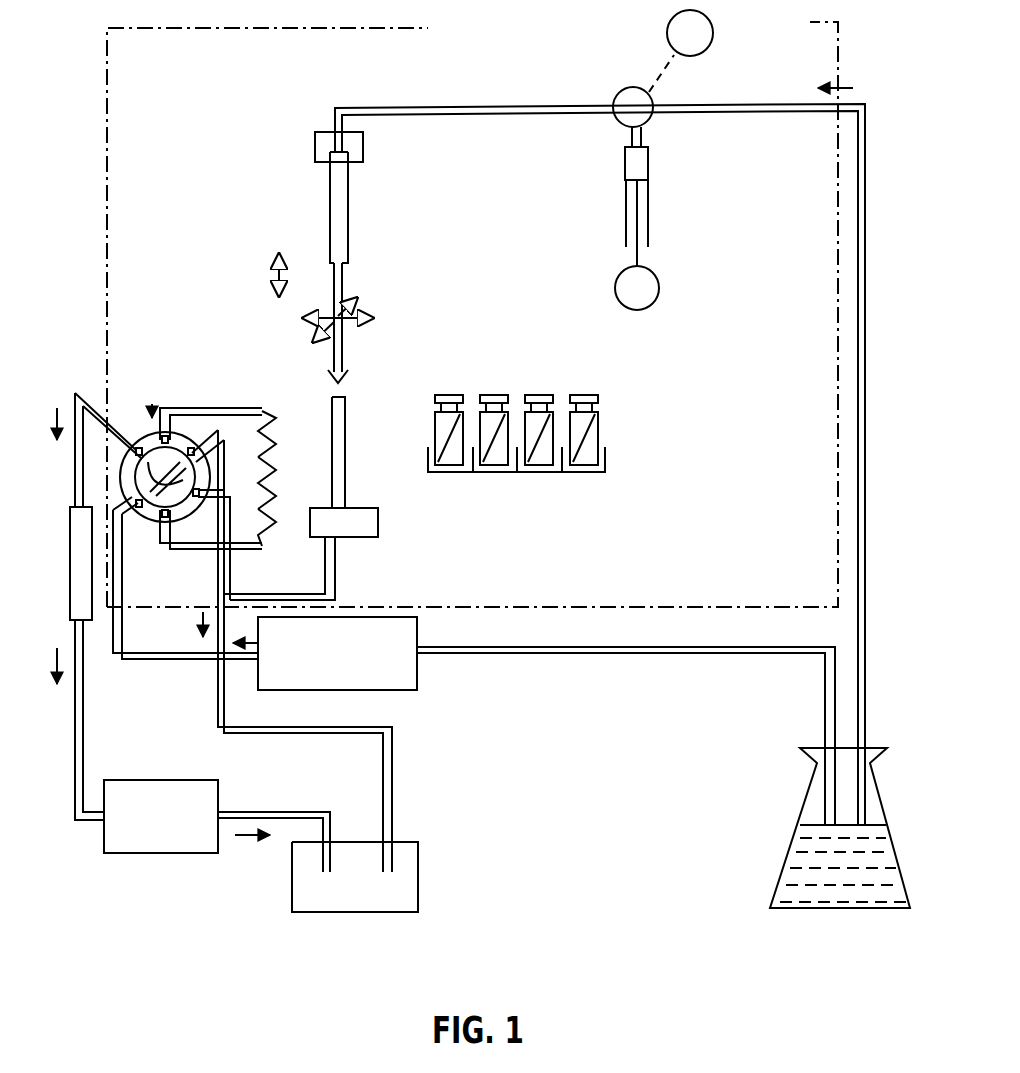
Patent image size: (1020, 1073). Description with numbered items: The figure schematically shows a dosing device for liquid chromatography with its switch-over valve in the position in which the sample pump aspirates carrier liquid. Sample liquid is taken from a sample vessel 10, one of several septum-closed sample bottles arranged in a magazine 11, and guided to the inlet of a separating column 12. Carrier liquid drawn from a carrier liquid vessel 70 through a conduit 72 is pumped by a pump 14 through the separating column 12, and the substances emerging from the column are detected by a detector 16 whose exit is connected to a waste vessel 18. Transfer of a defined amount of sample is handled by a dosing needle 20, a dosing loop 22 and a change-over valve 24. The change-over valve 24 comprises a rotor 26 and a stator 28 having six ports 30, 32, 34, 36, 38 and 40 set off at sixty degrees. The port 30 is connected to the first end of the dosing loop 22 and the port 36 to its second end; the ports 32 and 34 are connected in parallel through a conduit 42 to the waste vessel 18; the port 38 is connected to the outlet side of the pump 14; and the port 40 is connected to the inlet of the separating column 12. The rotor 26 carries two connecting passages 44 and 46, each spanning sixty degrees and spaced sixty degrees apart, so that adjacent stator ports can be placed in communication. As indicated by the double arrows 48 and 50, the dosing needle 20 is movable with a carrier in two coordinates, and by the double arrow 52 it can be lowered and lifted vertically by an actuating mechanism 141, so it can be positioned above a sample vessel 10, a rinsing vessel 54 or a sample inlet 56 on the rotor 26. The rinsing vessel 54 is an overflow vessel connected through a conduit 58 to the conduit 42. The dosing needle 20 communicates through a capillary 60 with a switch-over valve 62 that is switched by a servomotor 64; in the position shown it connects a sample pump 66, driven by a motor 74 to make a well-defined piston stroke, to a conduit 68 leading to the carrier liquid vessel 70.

The sample vessel 10 is at (588, 445).
The magazine 11 is at (605, 472).
The separating column 12 is at (78, 523).
The pump 14 is at (378, 620).
The detector 16 is at (178, 792).
The waste vessel 18 is at (405, 855).
The dosing needle 20 is at (347, 275).
The dosing loop 22 is at (276, 442).
The change-over valve 24 is at (153, 406).
The rotor 26 is at (211, 545).
The stator 28 is at (150, 432).
The port 30 is at (185, 402).
The port 32 is at (200, 452).
The port 34 is at (276, 482).
The port 36 is at (160, 548).
The port 38 is at (128, 510).
The port 40 is at (112, 418).
The conduit 42 is at (218, 690).
The connecting passage 44 is at (272, 512).
The connecting passage 46 is at (185, 584).
The double arrow 48 is at (352, 310).
The double arrow 50 is at (350, 335).
The double arrow 52 is at (277, 270).
The rinsing vessel 54 is at (345, 458).
The sample inlet 56 is at (215, 428).
The conduit 58 is at (330, 578).
The capillary 60 is at (468, 106).
The switch-over valve 62 is at (620, 96).
The servomotor 64 is at (713, 36).
The sample pump 66 is at (640, 155).
The conduit 68 is at (858, 300).
The carrier liquid vessel 70 is at (815, 790).
The conduit 72 is at (590, 655).
The motor 74 is at (615, 290).
The actuating mechanism 141 is at (365, 150).